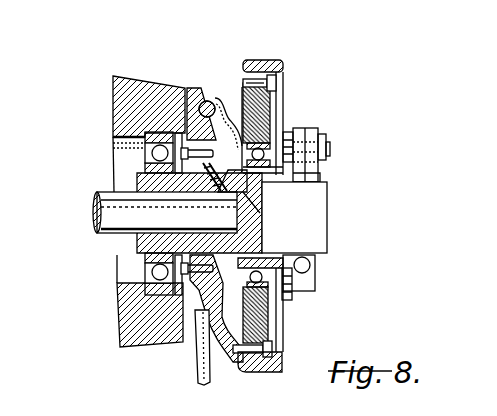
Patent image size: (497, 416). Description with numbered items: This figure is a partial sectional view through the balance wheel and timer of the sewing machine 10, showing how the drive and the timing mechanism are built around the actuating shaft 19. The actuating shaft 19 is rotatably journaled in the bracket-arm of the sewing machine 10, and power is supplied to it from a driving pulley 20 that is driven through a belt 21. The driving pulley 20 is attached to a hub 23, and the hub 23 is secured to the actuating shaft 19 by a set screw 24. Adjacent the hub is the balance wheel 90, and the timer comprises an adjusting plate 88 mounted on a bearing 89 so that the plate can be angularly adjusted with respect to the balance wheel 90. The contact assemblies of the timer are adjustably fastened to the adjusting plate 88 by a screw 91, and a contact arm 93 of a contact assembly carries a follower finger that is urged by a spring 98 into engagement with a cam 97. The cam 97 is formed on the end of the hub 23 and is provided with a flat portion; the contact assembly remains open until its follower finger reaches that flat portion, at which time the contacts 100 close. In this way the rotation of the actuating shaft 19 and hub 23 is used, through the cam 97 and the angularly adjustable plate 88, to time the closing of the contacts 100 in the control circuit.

The sewing machine 10 is at (111, 96).
The actuating shaft 19 is at (110, 213).
The driving pulley 20 is at (202, 90).
The belt 21 is at (208, 101).
The hub 23 is at (137, 240).
The set screw 24 is at (222, 177).
The adjusting plate 88 is at (278, 140).
The bearing 89 is at (250, 279).
The balance wheel 90 is at (265, 62).
The screw 91 is at (291, 147).
The contact arm 93 is at (311, 177).
The cam 97 is at (320, 210).
The spring 98 is at (312, 137).
The contacts 100 is at (308, 268).